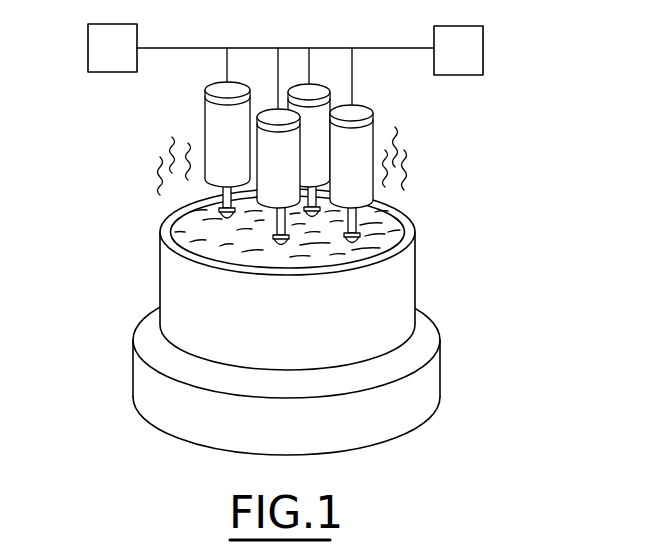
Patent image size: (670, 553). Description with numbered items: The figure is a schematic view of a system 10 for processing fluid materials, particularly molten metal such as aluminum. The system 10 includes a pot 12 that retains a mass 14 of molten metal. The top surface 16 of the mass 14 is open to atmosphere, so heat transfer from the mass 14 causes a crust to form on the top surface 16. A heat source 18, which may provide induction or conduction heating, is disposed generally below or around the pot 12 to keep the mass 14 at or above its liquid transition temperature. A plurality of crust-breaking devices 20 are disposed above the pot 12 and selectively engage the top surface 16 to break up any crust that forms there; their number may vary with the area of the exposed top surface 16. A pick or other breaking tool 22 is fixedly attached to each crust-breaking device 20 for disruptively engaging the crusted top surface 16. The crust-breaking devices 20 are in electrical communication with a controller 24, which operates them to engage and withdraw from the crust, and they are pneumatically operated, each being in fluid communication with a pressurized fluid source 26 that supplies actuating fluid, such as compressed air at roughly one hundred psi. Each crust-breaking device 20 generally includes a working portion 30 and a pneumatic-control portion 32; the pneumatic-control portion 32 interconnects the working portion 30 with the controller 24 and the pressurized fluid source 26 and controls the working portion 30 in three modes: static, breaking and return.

The system 10 is at (556, 170).
The pot 12 is at (416, 270).
The mass 14 is at (178, 233).
The top surface 16 is at (386, 220).
The heat source 18 is at (433, 368).
The crust-breaking device 20 is at (267, 191).
The breaking tool 22 is at (234, 224).
The controller 24 is at (483, 58).
The pressurized fluid source 26 is at (88, 48).
The working portion 30 is at (207, 133).
The pneumatic-control portion 32 is at (213, 113).